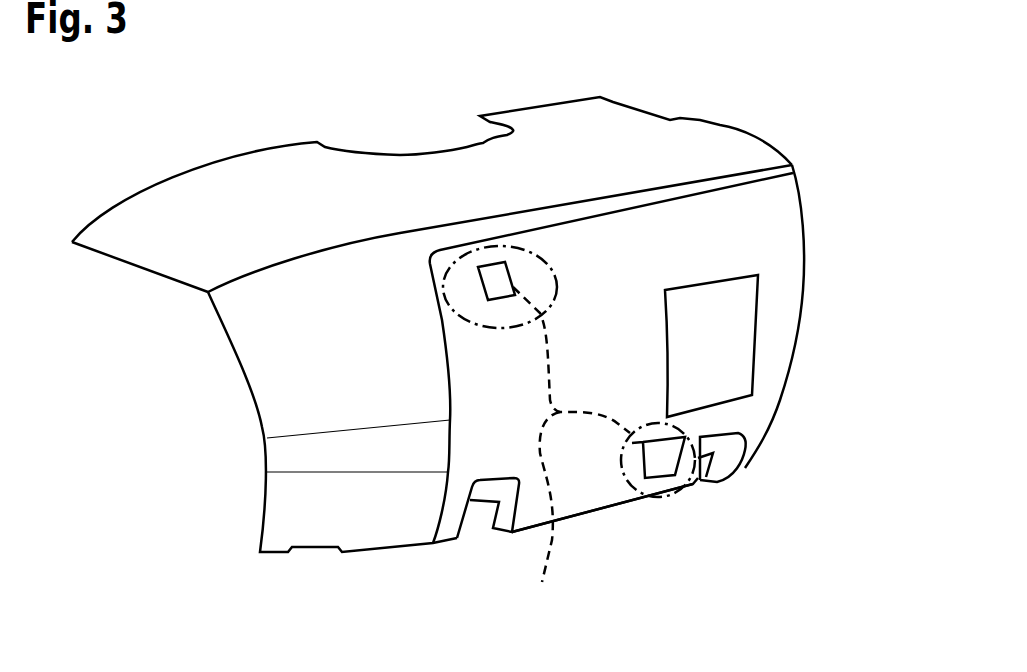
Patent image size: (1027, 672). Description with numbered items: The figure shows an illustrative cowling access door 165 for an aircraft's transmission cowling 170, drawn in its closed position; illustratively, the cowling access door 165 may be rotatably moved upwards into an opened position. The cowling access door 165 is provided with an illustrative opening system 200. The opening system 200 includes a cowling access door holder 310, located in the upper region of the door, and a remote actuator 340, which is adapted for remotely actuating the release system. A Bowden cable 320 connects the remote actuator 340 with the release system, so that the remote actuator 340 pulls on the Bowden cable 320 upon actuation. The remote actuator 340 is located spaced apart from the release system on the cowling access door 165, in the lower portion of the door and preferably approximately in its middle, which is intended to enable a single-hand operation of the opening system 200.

The transmission cowling 170 is at (774, 96).
The opening system 200 is at (493, 544).
The cowling access door holder 310 is at (446, 300).
The Bowden cable 320 is at (571, 453).
The remote actuator 340 is at (697, 485).
The cowling access door 165 is at (601, 524).